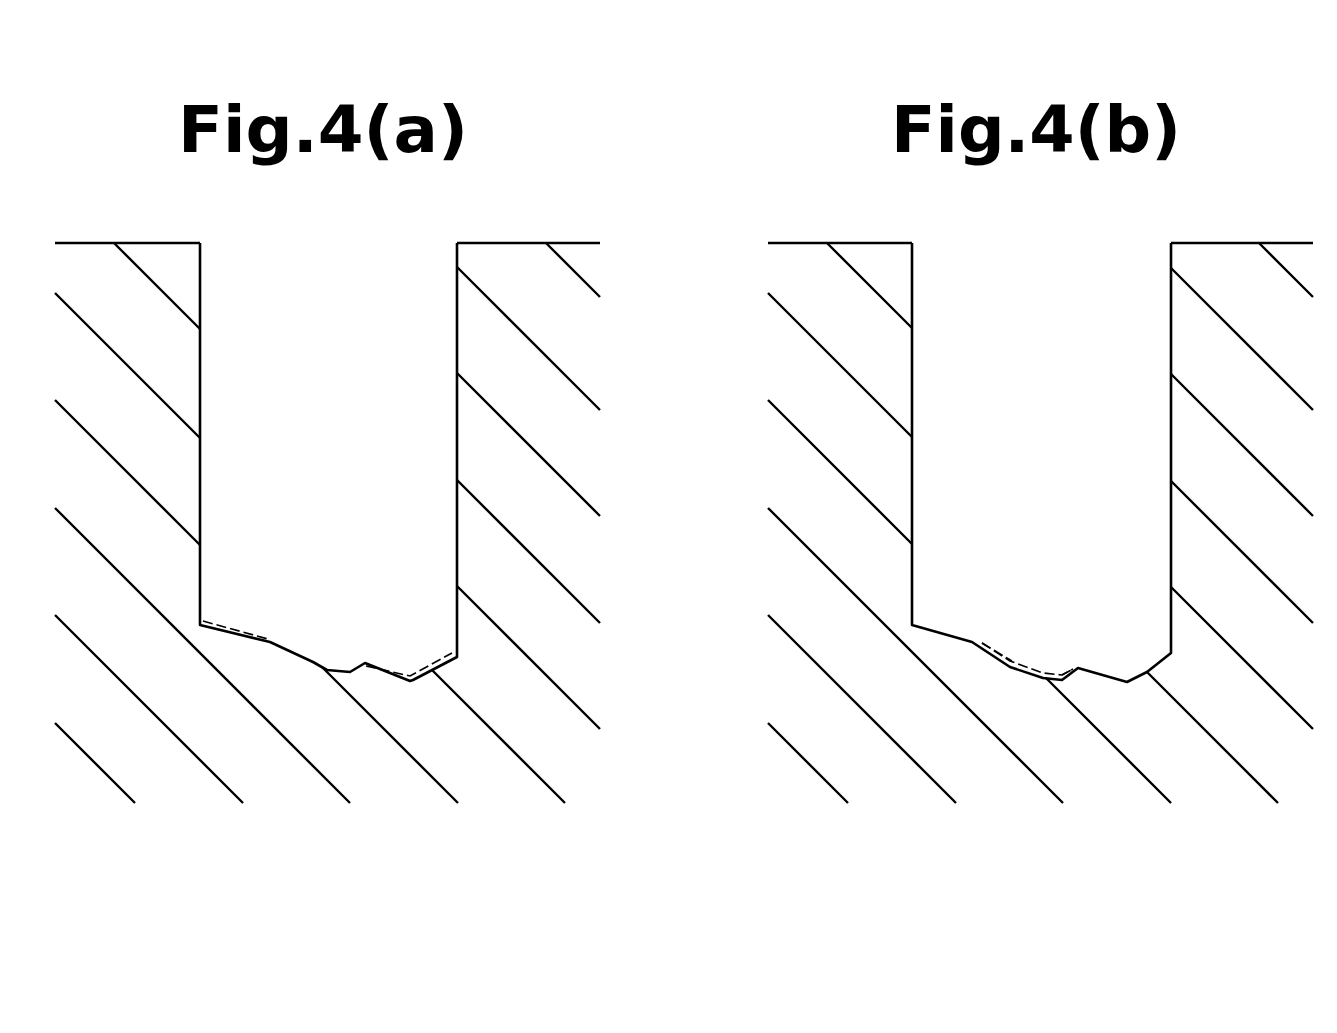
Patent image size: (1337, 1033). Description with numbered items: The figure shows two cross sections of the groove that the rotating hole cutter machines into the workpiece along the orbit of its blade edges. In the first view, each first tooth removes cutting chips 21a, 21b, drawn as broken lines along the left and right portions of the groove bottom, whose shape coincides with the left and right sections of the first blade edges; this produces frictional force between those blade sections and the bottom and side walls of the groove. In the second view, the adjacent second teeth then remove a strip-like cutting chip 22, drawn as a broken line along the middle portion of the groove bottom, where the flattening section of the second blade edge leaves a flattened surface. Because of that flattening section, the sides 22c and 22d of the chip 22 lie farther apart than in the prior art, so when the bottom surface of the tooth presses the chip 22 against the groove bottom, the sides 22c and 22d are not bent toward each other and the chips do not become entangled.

The cutting chip 21a is at (227, 625).
The cutting chip 21b is at (400, 668).
The cutting chip 22 is at (1013, 657).
The side of chip 22c is at (982, 643).
The side of chip 22d is at (1077, 665).